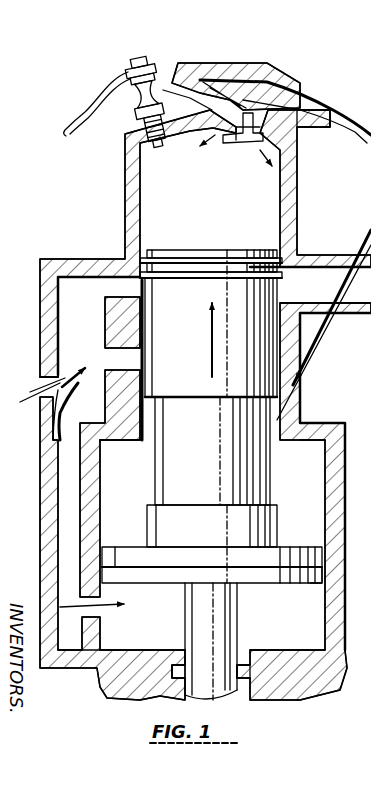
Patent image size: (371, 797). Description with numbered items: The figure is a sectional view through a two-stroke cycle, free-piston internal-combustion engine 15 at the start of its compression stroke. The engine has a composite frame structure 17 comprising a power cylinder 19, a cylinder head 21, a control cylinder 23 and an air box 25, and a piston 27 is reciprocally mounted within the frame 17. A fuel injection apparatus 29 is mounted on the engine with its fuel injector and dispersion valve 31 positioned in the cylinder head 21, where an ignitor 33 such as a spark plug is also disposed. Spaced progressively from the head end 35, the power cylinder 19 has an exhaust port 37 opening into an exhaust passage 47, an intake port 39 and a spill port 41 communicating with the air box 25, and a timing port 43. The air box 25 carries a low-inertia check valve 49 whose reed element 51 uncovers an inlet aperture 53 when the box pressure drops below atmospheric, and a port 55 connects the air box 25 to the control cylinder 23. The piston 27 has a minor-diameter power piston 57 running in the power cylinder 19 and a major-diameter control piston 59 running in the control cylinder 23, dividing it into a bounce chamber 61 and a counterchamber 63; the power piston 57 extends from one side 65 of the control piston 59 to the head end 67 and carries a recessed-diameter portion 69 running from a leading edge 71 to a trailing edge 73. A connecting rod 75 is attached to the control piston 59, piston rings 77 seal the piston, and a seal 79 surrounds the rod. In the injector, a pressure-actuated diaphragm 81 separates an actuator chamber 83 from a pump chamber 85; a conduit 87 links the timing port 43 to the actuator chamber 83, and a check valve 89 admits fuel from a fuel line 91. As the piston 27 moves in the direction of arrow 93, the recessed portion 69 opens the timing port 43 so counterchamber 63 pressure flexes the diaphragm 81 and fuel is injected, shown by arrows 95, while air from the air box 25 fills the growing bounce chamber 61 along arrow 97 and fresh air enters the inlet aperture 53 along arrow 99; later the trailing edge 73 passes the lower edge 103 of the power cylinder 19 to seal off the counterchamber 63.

The free-piston internal-combustion engine 15 is at (122, 190).
The composite frame structure 17 is at (310, 672).
The power cylinder 19 is at (278, 190).
The cylinder head 21 is at (125, 147).
The control cylinder 23 is at (305, 493).
The air box 25 is at (58, 347).
The piston 27 is at (263, 523).
The fuel injection apparatus 29 is at (305, 76).
The fuel injector and dispersion valve 31 is at (246, 130).
The ignitor 33 is at (127, 85).
The head end 35 is at (173, 133).
The exhaust port 37 is at (280, 283).
The intake port 39 is at (140, 288).
The spill port 41 is at (140, 357).
The timing port 43 is at (290, 412).
The exhaust passage 47 is at (325, 293).
The low-inertia check valve 49 is at (33, 378).
The reed element 51 is at (70, 408).
The inlet aperture 53 is at (40, 397).
The port 55 is at (103, 618).
The power piston 57 is at (199, 381).
The control piston 59 is at (312, 585).
The bounce chamber 61 is at (300, 635).
The counterchamber 63 is at (307, 457).
The side of the major-diameter portion 65 is at (137, 523).
The head end of piston 67 is at (195, 250).
The recessed-diameter portion 69 is at (193, 458).
The leading edge 71 is at (205, 400).
The trailing edge 73 is at (205, 503).
The connecting rod 75 is at (203, 604).
The piston rings 77 is at (217, 273).
The seal 79 is at (243, 665).
The pressure-actuated diaphragm 81 is at (277, 100).
The actuator chamber 83 is at (325, 105).
The pump chamber 85 is at (243, 100).
The conduit 87 is at (363, 140).
The check valve 89 is at (202, 102).
The fuel line 91 is at (163, 90).
The arrow 93 is at (207, 323).
The arrows 95 is at (265, 160).
The arrow 97 is at (103, 603).
The arrow 99 is at (68, 387).
The lower edge of the power cylinder 103 is at (148, 440).